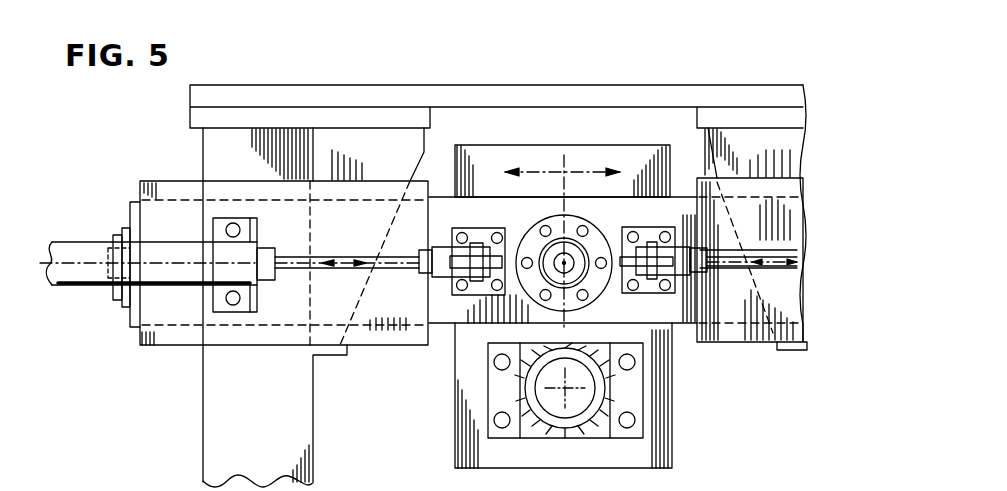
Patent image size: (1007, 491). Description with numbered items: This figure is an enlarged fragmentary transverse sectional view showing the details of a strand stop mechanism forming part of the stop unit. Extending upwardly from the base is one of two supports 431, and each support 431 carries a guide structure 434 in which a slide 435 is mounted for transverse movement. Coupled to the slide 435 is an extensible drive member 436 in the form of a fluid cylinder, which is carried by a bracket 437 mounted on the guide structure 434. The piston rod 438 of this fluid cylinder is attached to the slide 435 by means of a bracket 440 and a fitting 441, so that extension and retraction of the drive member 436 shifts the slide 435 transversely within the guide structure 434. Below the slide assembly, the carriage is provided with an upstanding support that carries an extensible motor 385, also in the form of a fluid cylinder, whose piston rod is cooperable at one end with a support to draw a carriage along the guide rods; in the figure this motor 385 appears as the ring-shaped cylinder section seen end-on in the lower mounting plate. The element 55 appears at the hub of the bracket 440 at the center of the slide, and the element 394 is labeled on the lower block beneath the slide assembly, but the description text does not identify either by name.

The support 431 is at (217, 416).
The guide structure 434 is at (165, 190).
The slide 435 is at (447, 327).
The extensible drive member 436 is at (82, 280).
The bracket 437 is at (259, 307).
The piston rod 438 is at (392, 270).
The bracket 440 is at (508, 235).
The fitting 441 is at (446, 235).
The spindle 55 is at (565, 264).
The extensible motor 385 is at (575, 428).
The support block 394 is at (563, 407).